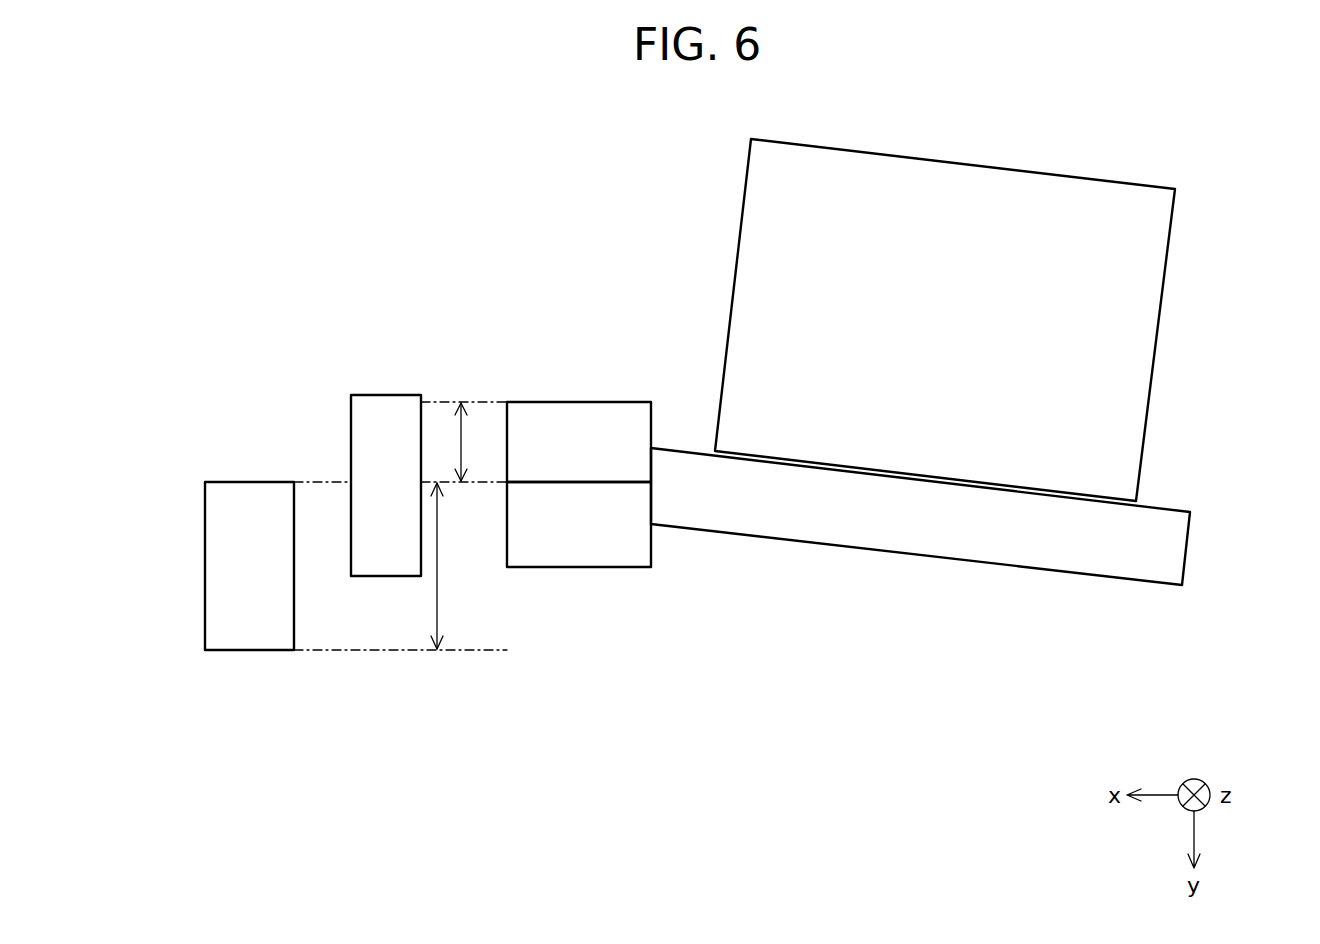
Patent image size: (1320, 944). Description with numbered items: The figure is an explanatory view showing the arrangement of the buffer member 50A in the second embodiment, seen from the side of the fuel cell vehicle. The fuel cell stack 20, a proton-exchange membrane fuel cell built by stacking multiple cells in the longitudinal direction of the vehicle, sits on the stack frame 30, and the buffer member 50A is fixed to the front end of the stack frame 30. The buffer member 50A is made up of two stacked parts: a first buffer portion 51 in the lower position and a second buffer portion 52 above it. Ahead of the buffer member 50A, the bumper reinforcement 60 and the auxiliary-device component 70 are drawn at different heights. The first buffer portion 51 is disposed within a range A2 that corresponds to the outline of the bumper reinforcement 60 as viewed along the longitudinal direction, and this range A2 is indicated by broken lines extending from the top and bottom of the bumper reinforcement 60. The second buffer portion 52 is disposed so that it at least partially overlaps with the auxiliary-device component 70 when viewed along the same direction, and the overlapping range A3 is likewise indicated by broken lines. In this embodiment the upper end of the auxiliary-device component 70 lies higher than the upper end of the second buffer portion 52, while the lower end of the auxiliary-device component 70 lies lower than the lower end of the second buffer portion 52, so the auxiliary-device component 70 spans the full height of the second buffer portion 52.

The fuel cell stack 20 is at (1153, 347).
The stack frame 30 is at (912, 553).
The buffer member 50A is at (596, 479).
The first buffer portion 51 is at (577, 568).
The second buffer portion 52 is at (581, 402).
The bumper reinforcement 60 is at (249, 650).
The auxiliary-device component 70 is at (383, 577).
The range corresponding to the outline of the bumper reinforcement A2 is at (400, 566).
The overlapping range A3 is at (464, 441).